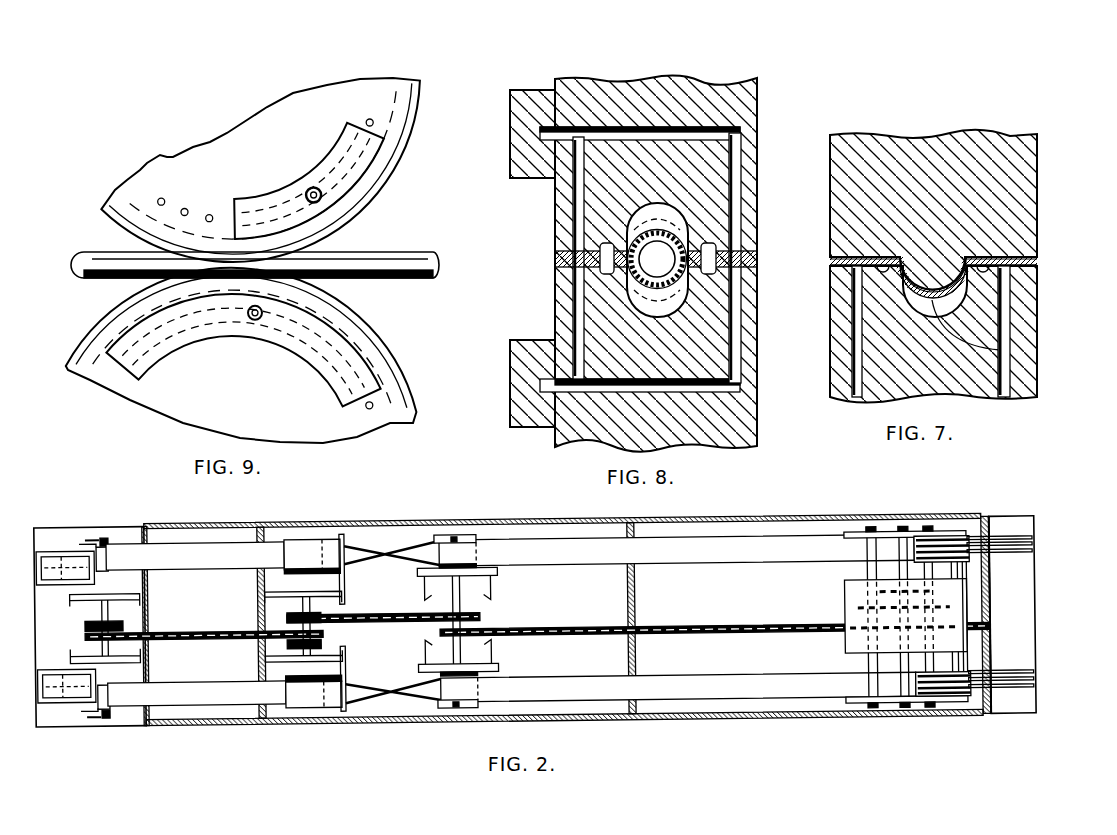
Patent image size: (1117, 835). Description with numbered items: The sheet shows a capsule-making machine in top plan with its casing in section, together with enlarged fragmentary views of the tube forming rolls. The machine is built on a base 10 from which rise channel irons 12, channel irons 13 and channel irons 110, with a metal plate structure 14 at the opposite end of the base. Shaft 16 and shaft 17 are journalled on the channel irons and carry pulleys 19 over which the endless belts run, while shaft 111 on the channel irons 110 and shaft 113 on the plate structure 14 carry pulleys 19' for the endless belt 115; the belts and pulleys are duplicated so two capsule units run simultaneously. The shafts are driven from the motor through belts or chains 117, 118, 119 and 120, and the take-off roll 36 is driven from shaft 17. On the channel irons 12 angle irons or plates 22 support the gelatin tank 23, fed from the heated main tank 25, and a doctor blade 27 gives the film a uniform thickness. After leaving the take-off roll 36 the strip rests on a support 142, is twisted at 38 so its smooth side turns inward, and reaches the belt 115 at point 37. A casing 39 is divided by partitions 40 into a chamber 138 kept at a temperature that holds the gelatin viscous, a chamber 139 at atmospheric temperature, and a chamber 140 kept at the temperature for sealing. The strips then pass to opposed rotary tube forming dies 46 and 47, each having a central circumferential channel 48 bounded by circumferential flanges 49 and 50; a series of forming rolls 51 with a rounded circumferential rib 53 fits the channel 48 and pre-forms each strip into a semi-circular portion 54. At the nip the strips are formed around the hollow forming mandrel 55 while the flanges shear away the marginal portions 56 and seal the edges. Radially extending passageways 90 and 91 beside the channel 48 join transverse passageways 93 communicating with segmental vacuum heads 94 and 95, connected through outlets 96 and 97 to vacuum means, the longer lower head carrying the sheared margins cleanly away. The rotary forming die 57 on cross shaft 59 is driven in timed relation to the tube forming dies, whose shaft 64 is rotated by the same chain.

In FIG. 2, the base 10 is at (1035, 606).
In FIG. 2, the channel irons 12 is at (68, 651).
In FIG. 2, the channel irons 13 is at (345, 640).
In FIG. 2, the metal plate structure 14 is at (845, 582).
In FIG. 2, the shaft 16 is at (100, 540).
In FIG. 2, the shaft 17 is at (305, 542).
In FIG. 2, the pulleys 19 is at (67, 625).
In FIG. 2, the pulleys 19' is at (714, 607).
In FIG. 2, the angle irons or plates 22 is at (128, 586).
In FIG. 2, the gelatin tank 23 is at (105, 540).
In FIG. 2, the main tank 25 is at (40, 568).
In FIG. 2, the doctor blade 27 is at (112, 556).
In FIG. 2, the take-off roll 36 is at (343, 537).
In FIG. 2, the point 37 is at (500, 550).
In FIG. 2, the twist 38 is at (508, 686).
In FIG. 2, the casing 39 is at (720, 720).
In FIG. 2, the partitions 40 is at (258, 605).
In FIG. 9, the rotary tube forming die 46 is at (406, 114).
In FIG. 8, the rotary tube forming die 46 is at (741, 101).
In FIG. 7, the rotary tube forming die 46 is at (932, 388).
In FIG. 2, the rotary tube forming die 46 is at (985, 518).
In FIG. 9, the rotary tube forming die 47 is at (345, 316).
In FIG. 8, the rotary tube forming die 47 is at (678, 440).
In FIG. 8, the central circumferential channel 48 is at (649, 227).
In FIG. 7, the central circumferential channel 48 is at (950, 297).
In FIG. 8, the circumferential flange 49 is at (686, 242).
In FIG. 7, the circumferential flange 49 is at (1037, 267).
In FIG. 8, the circumferential flange 50 is at (600, 242).
In FIG. 7, the circumferential flange 50 is at (830, 266).
In FIG. 7, the forming rolls 51 is at (1020, 157).
In FIG. 2, the forming rolls 51 is at (992, 519).
In FIG. 7, the circumferential rib 53 is at (930, 265).
In FIG. 7, the semi-circular portion 54 is at (960, 345).
In FIG. 9, the hollow forming mandrel 55 is at (378, 258).
In FIG. 2, the hollow forming mandrel 55 is at (1035, 546).
In FIG. 8, the marginal portions 56 is at (556, 262).
In FIG. 2, the rotary forming die 57 is at (858, 532).
In FIG. 2, the cross shaft 59 is at (876, 532).
In FIG. 2, the shaft 64 is at (935, 540).
In FIG. 8, the radially extending passageway 90 is at (573, 195).
In FIG. 7, the radially extending passageway 90 is at (855, 375).
In FIG. 8, the radially extending passageway 91 is at (735, 157).
In FIG. 7, the radially extending passageway 91 is at (1010, 382).
In FIG. 8, the transverse passageways 93 is at (625, 128).
In FIG. 9, the segmental vacuum head 94 is at (361, 160).
In FIG. 8, the segmental vacuum head 94 is at (517, 121).
In FIG. 9, the segmental vacuum head 95 is at (352, 362).
In FIG. 8, the segmental vacuum head 95 is at (520, 362).
In FIG. 9, the outlet 96 is at (308, 189).
In FIG. 9, the outlet 97 is at (258, 322).
In FIG. 2, the channel irons 110 is at (500, 625).
In FIG. 2, the shaft 111 is at (452, 532).
In FIG. 2, the shaft 113 is at (906, 528).
In FIG. 2, the endless belt 115 is at (441, 531).
In FIG. 2, the belt or chain 117 is at (712, 630).
In FIG. 2, the belt or chain 118 is at (378, 623).
In FIG. 2, the belt or chain 119 is at (218, 640).
In FIG. 2, the belt or chain 120 is at (85, 626).
In FIG. 2, the chamber 138 is at (205, 578).
In FIG. 2, the chamber 139 is at (545, 565).
In FIG. 2, the chamber 140 is at (745, 567).
In FIG. 2, the support 142 is at (348, 576).